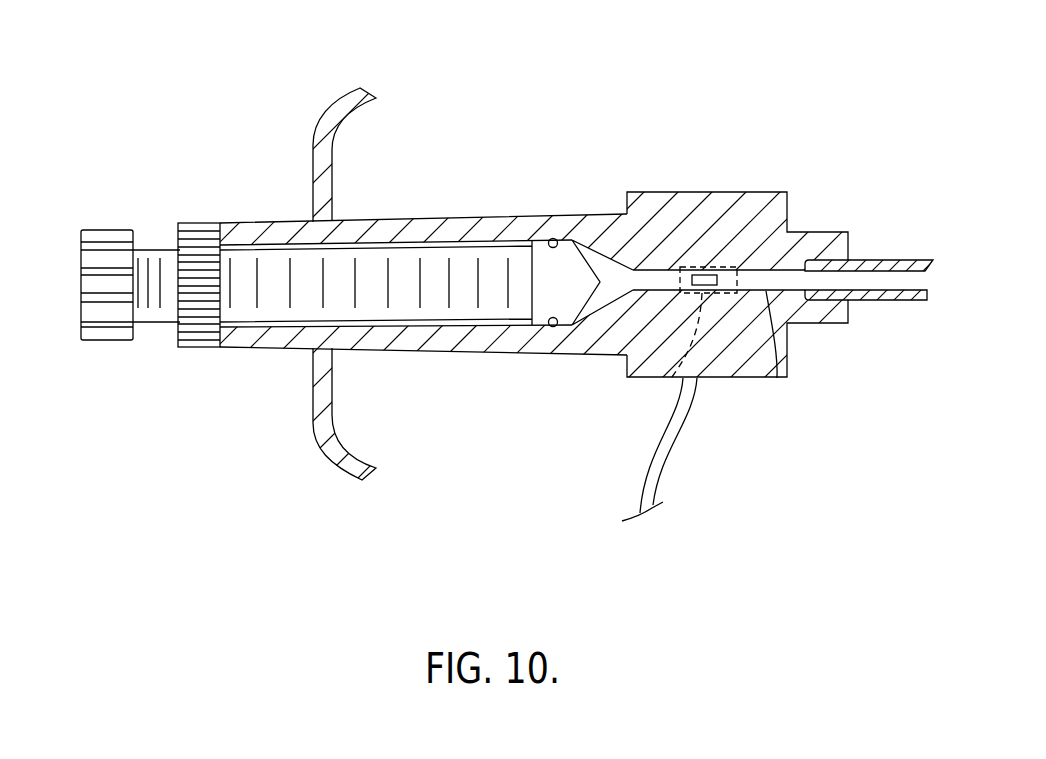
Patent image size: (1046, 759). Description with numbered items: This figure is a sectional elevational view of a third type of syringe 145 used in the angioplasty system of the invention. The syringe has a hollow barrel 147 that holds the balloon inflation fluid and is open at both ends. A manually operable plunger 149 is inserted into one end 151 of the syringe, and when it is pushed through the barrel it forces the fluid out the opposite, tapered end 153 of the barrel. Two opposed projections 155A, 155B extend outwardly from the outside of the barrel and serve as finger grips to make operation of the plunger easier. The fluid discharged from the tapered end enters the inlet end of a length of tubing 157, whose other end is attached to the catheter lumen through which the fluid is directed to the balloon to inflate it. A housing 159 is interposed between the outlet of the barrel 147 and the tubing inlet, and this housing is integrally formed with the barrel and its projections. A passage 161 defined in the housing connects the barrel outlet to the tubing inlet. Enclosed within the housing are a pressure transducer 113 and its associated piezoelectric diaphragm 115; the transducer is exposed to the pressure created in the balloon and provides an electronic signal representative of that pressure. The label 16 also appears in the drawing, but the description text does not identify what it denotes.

The syringe 145 is at (627, 108).
The plunger 149 is at (131, 197).
The end of the syringe 151 is at (232, 348).
The hollow barrel 147 is at (432, 219).
The tapered end of the barrel 153 is at (603, 306).
The projection 155A is at (364, 91).
The projection 155B is at (357, 479).
The housing 159 is at (785, 171).
The tubing 157 is at (943, 212).
The pressure transducer 113 is at (716, 258).
The piezoelectric diaphragm 115 is at (672, 377).
The lead 16 is at (762, 417).
The passage 161 is at (777, 378).